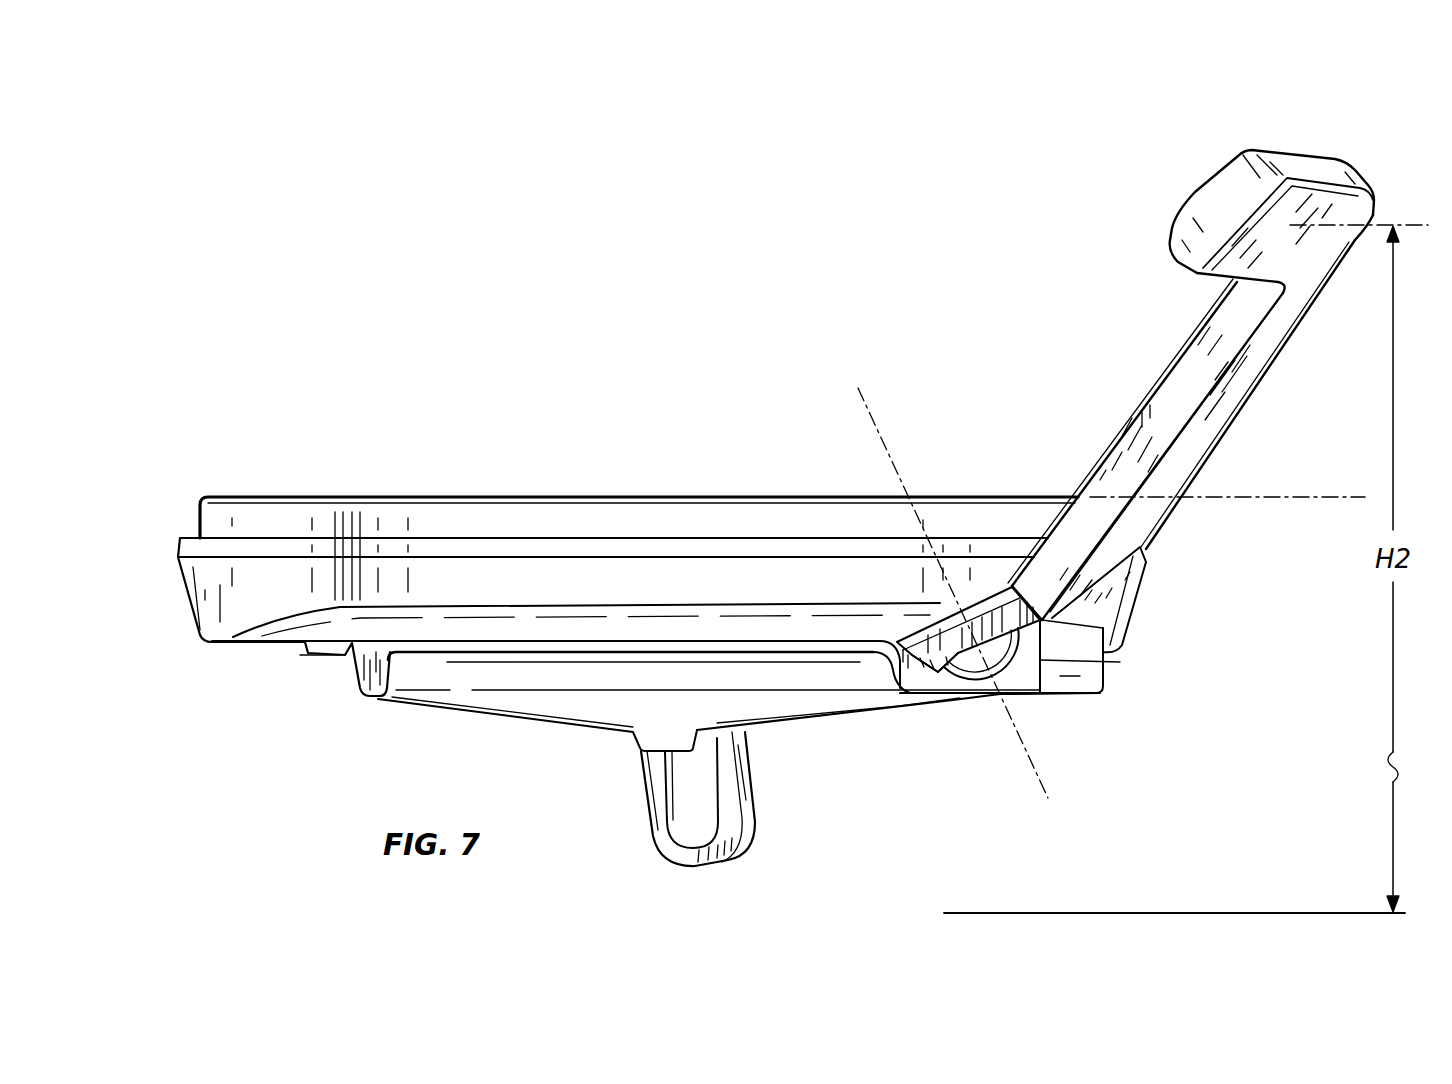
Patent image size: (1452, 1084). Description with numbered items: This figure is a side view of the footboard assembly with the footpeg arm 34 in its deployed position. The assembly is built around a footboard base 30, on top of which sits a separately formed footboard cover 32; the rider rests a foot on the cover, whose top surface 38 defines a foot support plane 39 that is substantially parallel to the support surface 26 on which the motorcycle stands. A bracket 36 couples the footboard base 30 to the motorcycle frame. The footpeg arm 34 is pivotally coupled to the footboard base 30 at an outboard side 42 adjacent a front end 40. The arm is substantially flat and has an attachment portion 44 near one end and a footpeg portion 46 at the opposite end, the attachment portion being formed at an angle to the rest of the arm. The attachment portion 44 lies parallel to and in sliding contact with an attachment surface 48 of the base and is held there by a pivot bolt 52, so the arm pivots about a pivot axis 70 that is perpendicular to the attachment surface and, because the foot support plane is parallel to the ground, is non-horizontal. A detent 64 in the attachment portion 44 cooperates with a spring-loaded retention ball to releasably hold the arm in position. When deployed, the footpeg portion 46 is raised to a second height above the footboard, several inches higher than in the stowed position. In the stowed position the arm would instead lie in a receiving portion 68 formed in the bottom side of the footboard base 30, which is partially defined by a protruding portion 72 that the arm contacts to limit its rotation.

The support surface 26 is at (1058, 912).
The footboard base 30 is at (232, 597).
The footboard cover 32 is at (232, 512).
The footpeg arm 34 is at (1207, 425).
The bracket 36 is at (683, 858).
The top surface 38 is at (357, 498).
The foot support plane 39 is at (1274, 498).
The front end 40 is at (1142, 578).
The outboard side 42 is at (620, 575).
The attachment portion 44 is at (1120, 662).
The footpeg portion 46 is at (1316, 207).
The attachment surface 48 is at (985, 625).
The pivot bolt 52 is at (1000, 632).
The detent 64 is at (968, 656).
The receiving portion 68 is at (290, 667).
The pivot axis 70 is at (1027, 757).
The protruding portion 72 is at (354, 673).